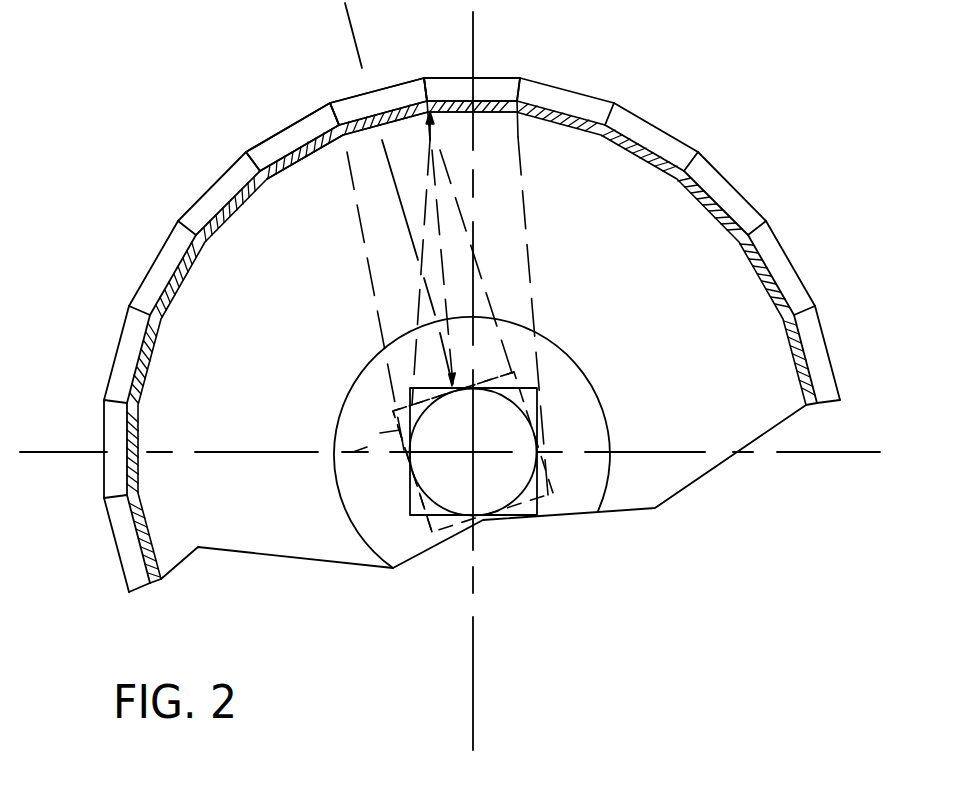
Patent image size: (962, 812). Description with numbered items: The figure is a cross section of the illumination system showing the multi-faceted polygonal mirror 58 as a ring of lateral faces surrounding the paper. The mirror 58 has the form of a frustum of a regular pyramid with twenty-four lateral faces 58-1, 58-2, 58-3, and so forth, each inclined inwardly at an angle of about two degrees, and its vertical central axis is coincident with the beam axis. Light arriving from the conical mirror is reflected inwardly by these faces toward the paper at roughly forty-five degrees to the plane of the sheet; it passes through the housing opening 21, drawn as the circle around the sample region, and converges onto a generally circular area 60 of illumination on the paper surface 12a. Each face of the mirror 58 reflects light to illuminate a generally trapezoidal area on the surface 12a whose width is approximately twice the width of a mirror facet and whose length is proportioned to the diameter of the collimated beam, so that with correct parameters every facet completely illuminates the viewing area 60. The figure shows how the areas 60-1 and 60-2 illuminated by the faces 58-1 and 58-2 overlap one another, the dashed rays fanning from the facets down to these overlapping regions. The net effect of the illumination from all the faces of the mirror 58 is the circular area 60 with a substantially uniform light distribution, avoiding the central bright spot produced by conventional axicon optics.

The multi-faceted polygonal mirror 58 is at (676, 116).
The first lateral face 58-1 is at (488, 78).
The second lateral face 58-2 is at (335, 102).
The third lateral face 58-3 is at (277, 132).
The housing opening 21 is at (572, 353).
The circular area of illumination 60 is at (570, 470).
The trapezoidal illuminated area 60-1 is at (570, 397).
The trapezoidal illuminated area 60-2 is at (340, 477).
The paper surface 12a is at (360, 400).